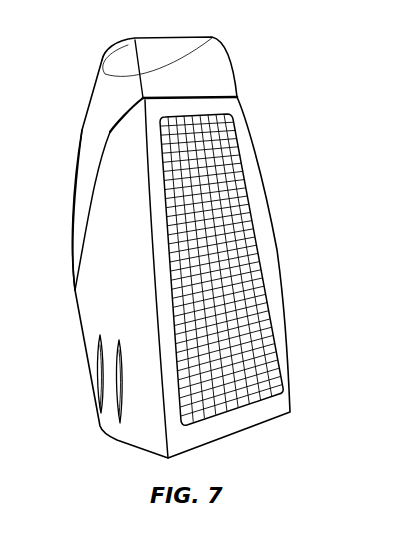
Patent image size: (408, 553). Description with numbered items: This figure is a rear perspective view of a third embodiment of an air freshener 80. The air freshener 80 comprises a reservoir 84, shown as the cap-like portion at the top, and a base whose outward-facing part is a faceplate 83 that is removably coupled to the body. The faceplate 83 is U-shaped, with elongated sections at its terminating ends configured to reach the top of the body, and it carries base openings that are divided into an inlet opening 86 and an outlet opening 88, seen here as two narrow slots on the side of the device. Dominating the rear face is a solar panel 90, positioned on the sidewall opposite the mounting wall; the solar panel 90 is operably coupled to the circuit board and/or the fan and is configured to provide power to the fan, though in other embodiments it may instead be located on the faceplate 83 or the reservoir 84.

The air freshener 80 is at (290, 147).
The faceplate 83 is at (92, 307).
The reservoir 84 is at (220, 73).
The inlet opening 86 is at (100, 355).
The outlet opening 88 is at (95, 393).
The solar panel 90 is at (262, 272).